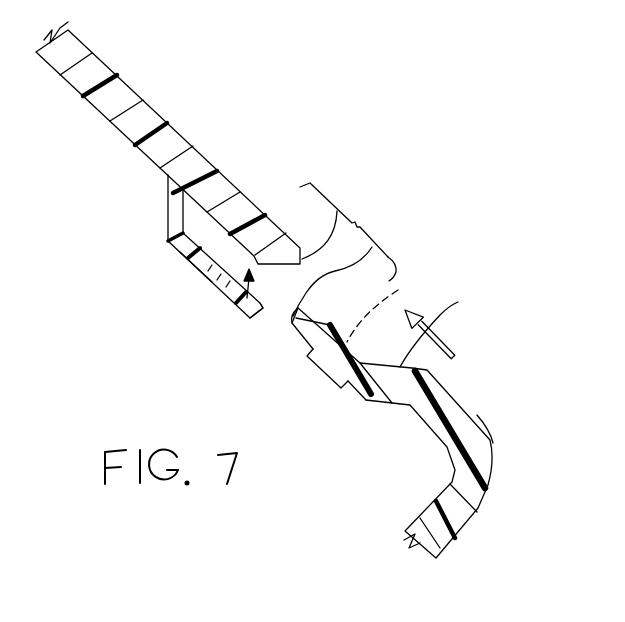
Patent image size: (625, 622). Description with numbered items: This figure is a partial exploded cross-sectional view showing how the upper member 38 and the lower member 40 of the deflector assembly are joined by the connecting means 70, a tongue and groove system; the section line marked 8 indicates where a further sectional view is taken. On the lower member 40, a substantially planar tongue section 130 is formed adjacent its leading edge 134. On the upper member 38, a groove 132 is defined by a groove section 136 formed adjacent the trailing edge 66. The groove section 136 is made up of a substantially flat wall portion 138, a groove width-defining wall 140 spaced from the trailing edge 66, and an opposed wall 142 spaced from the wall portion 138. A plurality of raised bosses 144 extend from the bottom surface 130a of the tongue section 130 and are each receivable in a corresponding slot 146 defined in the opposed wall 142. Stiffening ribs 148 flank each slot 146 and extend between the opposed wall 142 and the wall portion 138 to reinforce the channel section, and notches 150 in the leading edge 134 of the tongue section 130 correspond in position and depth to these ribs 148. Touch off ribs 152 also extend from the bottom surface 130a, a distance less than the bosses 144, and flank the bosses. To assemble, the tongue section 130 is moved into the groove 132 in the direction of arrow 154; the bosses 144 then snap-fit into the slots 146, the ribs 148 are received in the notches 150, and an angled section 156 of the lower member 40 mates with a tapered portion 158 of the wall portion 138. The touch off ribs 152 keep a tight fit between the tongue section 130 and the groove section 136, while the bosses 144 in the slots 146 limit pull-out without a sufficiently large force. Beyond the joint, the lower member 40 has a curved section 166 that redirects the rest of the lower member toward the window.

The upper member 38 is at (106, 64).
The groove width-defining wall 140 is at (170, 213).
The groove section 136 is at (223, 186).
The wall portion 138 is at (266, 226).
The tapered portion 158 is at (283, 268).
The opposed wall 142 is at (174, 251).
The stiffening ribs 148 is at (168, 241).
The slot 146 is at (206, 284).
The groove 132 is at (250, 319).
The trailing edge 66 is at (337, 211).
The connecting means 70 is at (373, 248).
The leading edge 134 is at (361, 285).
The tongue section 130 is at (327, 326).
The raised bosses 144 is at (329, 390).
The bottom surface 130a is at (355, 397).
The touch off ribs 152 is at (299, 340).
The arrow 154 is at (447, 343).
The angled section 156 is at (418, 306).
The notches 150 is at (411, 305).
The lower member 40 is at (490, 462).
The curved section 166 is at (487, 492).
The section line 8- 8 is at (117, 249).